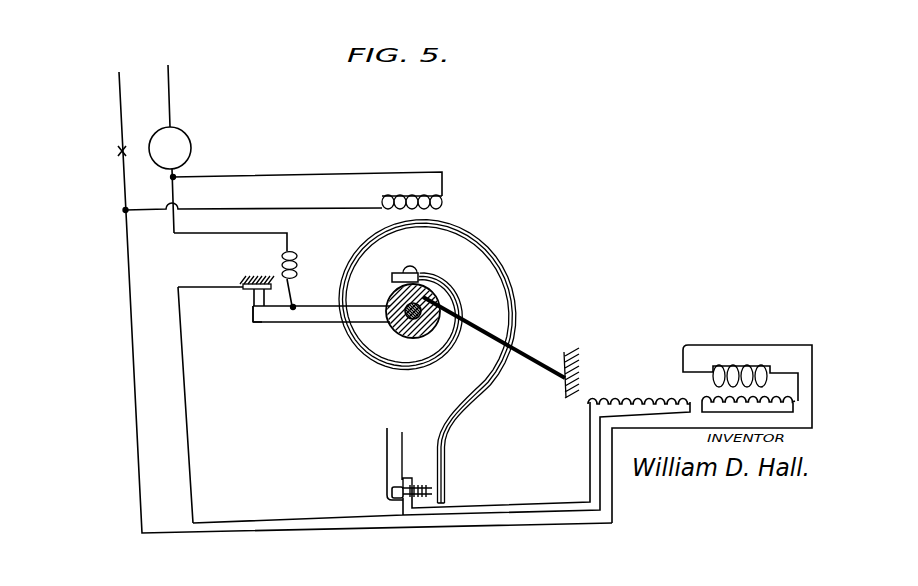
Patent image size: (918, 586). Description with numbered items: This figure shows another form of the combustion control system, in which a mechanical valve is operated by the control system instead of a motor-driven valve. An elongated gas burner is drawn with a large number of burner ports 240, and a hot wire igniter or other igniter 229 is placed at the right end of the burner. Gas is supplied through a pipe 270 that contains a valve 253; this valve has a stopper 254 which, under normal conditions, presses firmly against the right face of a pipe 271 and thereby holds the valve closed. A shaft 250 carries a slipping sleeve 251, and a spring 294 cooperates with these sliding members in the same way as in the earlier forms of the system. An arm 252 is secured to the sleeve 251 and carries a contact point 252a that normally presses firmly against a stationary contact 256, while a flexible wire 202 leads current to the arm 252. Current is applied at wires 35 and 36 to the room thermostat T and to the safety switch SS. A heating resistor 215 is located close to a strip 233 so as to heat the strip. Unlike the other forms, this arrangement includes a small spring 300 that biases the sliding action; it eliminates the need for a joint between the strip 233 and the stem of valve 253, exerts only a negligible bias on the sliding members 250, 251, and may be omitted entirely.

The wire 35 is at (117, 87).
The wire 36 is at (171, 105).
The safety switch SS is at (112, 154).
The heating resistor 215 is at (417, 193).
The flexible wire 202 is at (281, 260).
The stationary contact 256 is at (248, 291).
The arm 252 is at (310, 313).
The contact point 252a is at (253, 322).
The shaft 250 is at (443, 297).
The slipping sleeve 251 is at (402, 328).
The spring 294 is at (537, 359).
The strip 233 is at (497, 375).
The valve 253 is at (426, 490).
The small spring 300 is at (418, 485).
The stopper 254 is at (392, 490).
The pipe 271 is at (387, 440).
The pipe 270 is at (536, 511).
The burner ports 240 is at (630, 406).
The igniter 229 is at (738, 370).